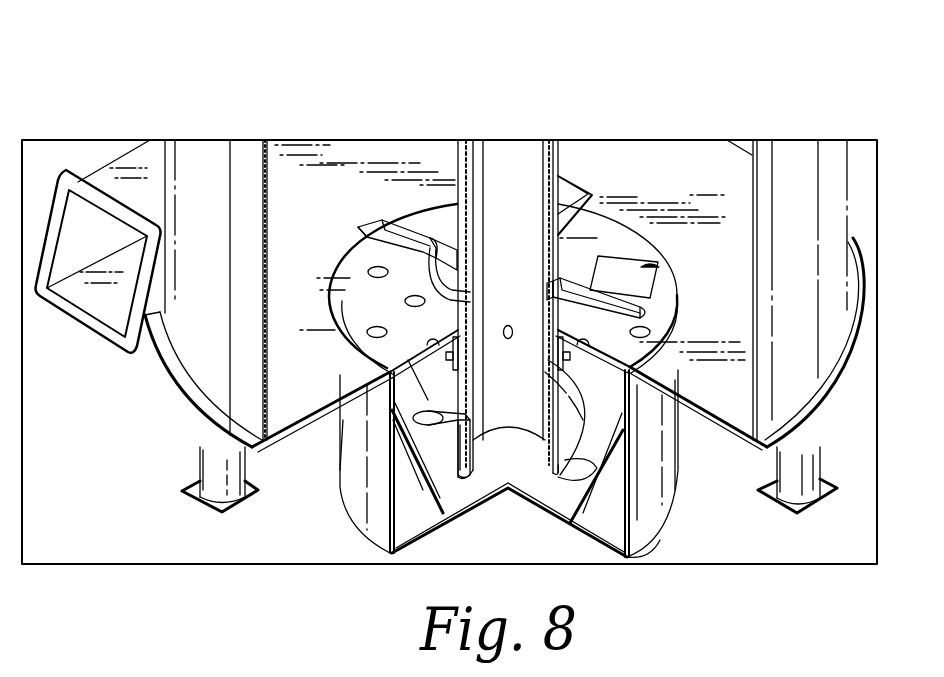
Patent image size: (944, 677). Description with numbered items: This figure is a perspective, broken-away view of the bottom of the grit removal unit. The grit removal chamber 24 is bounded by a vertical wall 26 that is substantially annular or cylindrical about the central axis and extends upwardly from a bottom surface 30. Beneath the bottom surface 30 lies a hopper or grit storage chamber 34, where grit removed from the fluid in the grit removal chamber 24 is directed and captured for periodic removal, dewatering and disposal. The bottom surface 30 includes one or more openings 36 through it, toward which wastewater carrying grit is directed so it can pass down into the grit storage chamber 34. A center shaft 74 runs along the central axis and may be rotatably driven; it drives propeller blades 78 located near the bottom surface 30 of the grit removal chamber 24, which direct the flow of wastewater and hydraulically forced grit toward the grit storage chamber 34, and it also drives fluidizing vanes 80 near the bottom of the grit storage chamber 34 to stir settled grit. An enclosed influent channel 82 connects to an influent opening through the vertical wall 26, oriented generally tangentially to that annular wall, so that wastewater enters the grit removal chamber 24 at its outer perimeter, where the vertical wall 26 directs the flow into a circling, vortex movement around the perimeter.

The grit removal chamber 24 is at (647, 162).
The vertical wall 26 is at (795, 180).
The bottom surface 30 is at (730, 186).
The grit storage chamber 34 is at (530, 497).
The openings 36 is at (372, 271).
The center shaft 74 is at (560, 172).
The propeller blades 78 is at (392, 232).
The fluidizing vanes 80 is at (443, 418).
The influent channel 82 is at (78, 228).